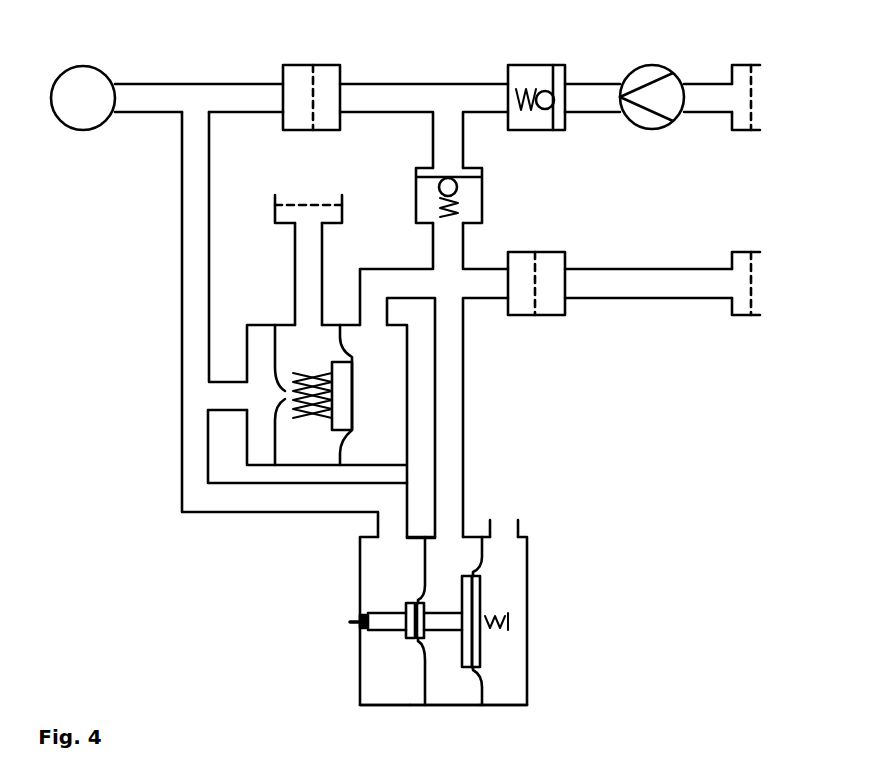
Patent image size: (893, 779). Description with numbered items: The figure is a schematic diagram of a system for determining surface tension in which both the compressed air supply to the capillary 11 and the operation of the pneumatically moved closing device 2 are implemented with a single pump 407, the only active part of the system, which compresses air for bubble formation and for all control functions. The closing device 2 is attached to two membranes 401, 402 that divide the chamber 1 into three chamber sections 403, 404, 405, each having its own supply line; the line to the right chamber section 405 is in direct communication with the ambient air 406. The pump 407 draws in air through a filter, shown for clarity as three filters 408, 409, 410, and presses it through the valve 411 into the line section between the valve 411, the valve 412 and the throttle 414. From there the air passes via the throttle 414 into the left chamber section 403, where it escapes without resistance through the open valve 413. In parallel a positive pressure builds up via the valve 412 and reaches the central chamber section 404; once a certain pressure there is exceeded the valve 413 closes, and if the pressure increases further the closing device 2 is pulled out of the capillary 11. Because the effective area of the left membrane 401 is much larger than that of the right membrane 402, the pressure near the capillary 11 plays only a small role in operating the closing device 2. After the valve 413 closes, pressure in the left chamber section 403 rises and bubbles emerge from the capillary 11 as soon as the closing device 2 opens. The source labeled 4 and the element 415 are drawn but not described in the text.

The chamber 1 is at (527, 593).
The closing device 2 is at (373, 630).
The pressure source 4 is at (78, 57).
The capillary 11 is at (348, 613).
The membrane 401 is at (425, 567).
The membrane 402 is at (483, 558).
The left chamber section 403 is at (368, 695).
The central chamber section 404 is at (443, 695).
The right chamber section 405 is at (517, 695).
The ambient air 406 is at (500, 528).
The pump 407 is at (668, 82).
The filter 408 is at (319, 194).
The filter 409 is at (771, 82).
The filter 410 is at (766, 268).
The valve 411 is at (556, 82).
The valve 412 is at (477, 190).
The valve 413 is at (341, 417).
The throttle 414 is at (337, 88).
The throttle 415 is at (560, 273).